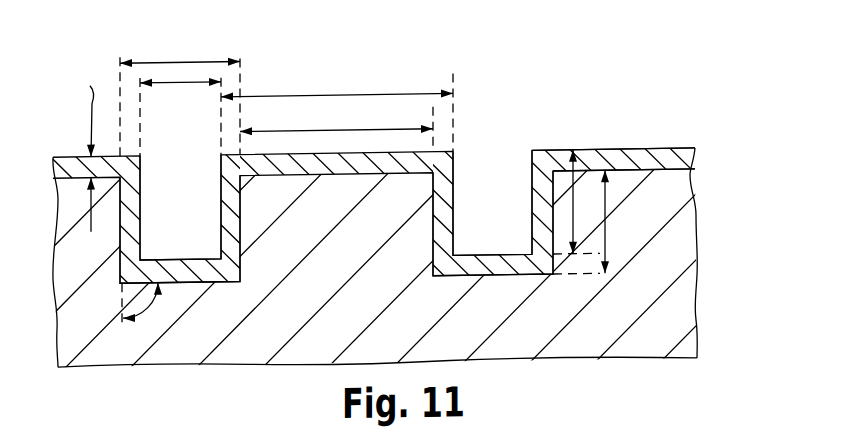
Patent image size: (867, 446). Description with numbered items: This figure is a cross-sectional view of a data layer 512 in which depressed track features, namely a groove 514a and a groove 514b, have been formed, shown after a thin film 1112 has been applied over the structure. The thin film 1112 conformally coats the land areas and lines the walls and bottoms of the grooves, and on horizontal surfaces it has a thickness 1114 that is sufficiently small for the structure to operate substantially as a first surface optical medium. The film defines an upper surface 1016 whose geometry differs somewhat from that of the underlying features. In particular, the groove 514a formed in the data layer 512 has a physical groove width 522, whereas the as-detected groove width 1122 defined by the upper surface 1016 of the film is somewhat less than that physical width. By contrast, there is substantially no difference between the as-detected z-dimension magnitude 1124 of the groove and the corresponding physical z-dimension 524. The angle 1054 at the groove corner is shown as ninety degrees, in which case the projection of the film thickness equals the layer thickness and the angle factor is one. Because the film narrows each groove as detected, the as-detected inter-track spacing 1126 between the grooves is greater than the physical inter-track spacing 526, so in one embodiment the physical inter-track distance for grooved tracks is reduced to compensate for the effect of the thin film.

The data layer 512 is at (312, 306).
The groove 514a is at (122, 209).
The groove 514b is at (448, 208).
The groove width 522 is at (157, 65).
The as-detected groove width 1122 is at (190, 85).
The as-detected inter-track spacing 1126 is at (307, 100).
The physical inter-track spacing 526 is at (367, 135).
The thickness 1114 is at (87, 142).
The upper surface 1016 is at (72, 158).
The as-detected z-dimension magnitude 1124 is at (575, 198).
The physical z-dimension 524 is at (607, 226).
The angle 1054 is at (152, 316).
The thin film 1112 is at (697, 168).